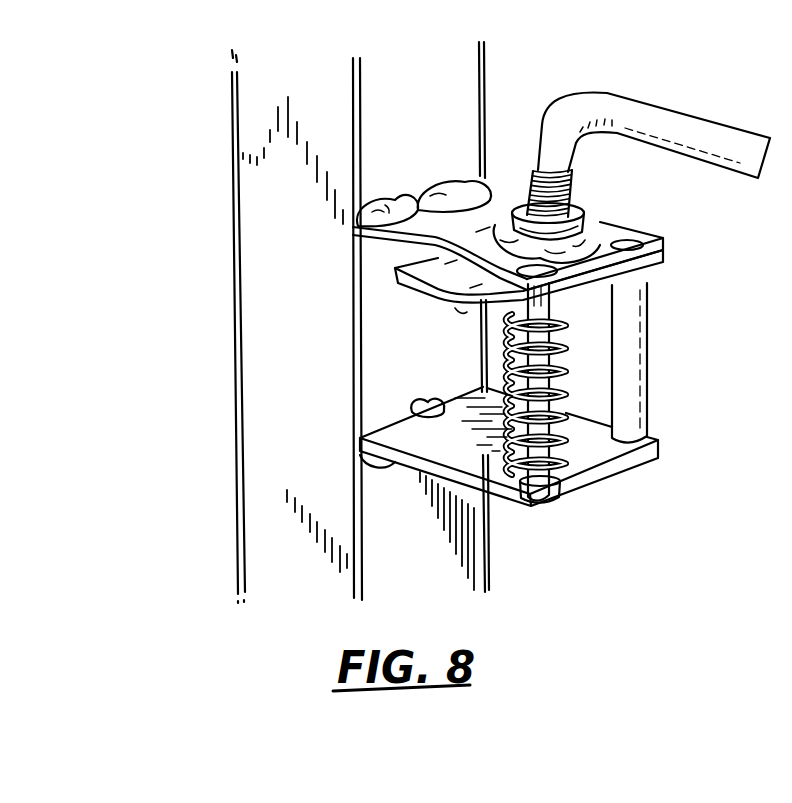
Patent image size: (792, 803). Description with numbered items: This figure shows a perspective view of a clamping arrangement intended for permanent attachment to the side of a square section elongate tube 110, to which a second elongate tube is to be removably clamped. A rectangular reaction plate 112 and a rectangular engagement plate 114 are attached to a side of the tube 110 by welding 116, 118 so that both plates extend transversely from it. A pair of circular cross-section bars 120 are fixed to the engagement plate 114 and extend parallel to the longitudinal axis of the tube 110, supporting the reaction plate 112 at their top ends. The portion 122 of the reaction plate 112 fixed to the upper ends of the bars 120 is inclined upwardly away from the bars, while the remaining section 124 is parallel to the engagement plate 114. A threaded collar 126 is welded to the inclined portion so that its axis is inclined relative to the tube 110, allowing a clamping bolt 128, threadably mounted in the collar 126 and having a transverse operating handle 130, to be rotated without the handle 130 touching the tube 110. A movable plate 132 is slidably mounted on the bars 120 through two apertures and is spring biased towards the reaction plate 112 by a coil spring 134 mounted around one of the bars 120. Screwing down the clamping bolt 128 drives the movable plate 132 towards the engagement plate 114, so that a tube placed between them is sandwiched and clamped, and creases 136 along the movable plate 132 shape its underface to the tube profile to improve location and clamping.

The square section elongate tube 110 is at (262, 503).
The reaction plate 112 is at (500, 197).
The engagement plate 114 is at (615, 470).
The welding 116 is at (357, 470).
The welding 118 is at (422, 192).
The circular cross-section bars 120 is at (633, 385).
The inclined portion of the reaction plate 122 is at (608, 232).
The remaining section of the reaction plate 124 is at (390, 238).
The threaded collar 126 is at (573, 225).
The clamping bolt 128 is at (558, 143).
The transverse operating handle 130 is at (750, 147).
The movable plate 132 is at (671, 268).
The coil spring 134 is at (565, 477).
The creases 136 is at (482, 305).